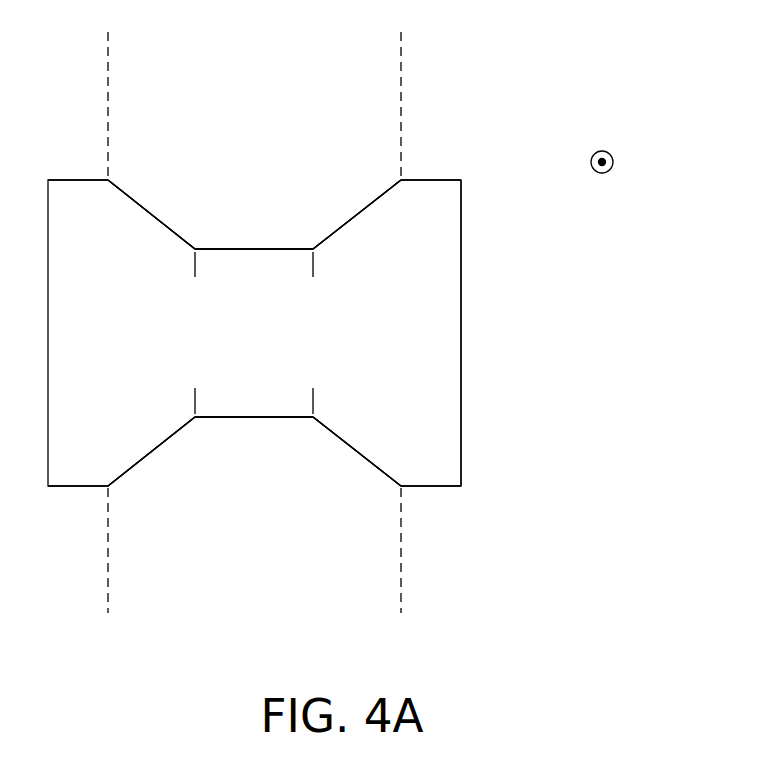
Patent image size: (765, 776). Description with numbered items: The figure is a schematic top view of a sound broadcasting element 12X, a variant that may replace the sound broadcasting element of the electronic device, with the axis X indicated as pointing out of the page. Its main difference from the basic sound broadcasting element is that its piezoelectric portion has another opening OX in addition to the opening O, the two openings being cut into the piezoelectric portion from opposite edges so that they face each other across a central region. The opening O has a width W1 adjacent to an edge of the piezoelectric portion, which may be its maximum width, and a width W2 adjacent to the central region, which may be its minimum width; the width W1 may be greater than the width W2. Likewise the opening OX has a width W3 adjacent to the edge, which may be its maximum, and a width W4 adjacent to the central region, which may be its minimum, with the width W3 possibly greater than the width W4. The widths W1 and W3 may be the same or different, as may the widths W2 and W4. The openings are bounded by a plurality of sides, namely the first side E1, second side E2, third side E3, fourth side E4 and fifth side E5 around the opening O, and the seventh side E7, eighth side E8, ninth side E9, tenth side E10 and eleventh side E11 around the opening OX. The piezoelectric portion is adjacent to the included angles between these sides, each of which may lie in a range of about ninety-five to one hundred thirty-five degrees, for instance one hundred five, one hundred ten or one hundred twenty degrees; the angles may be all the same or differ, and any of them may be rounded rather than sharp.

The sound broadcasting element 12X is at (549, 469).
The X direction X is at (613, 162).
The first side E1 is at (71, 490).
The second side E2 is at (158, 452).
The third side E3 is at (255, 421).
The fourth side E4 is at (353, 452).
The fifth side E5 is at (447, 490).
The seventh side E7 is at (72, 176).
The eighth side E8 is at (156, 212).
The ninth side E9 is at (255, 245).
The tenth side E10 is at (353, 212).
The eleventh side E11 is at (445, 176).
The width of the opening O W1 is at (108, 613).
The width of the opening O W2 is at (195, 395).
The width of the opening OX W3 is at (108, 32).
The width of the opening OX W4 is at (195, 271).
The opening O is at (224, 500).
The opening OX is at (274, 166).